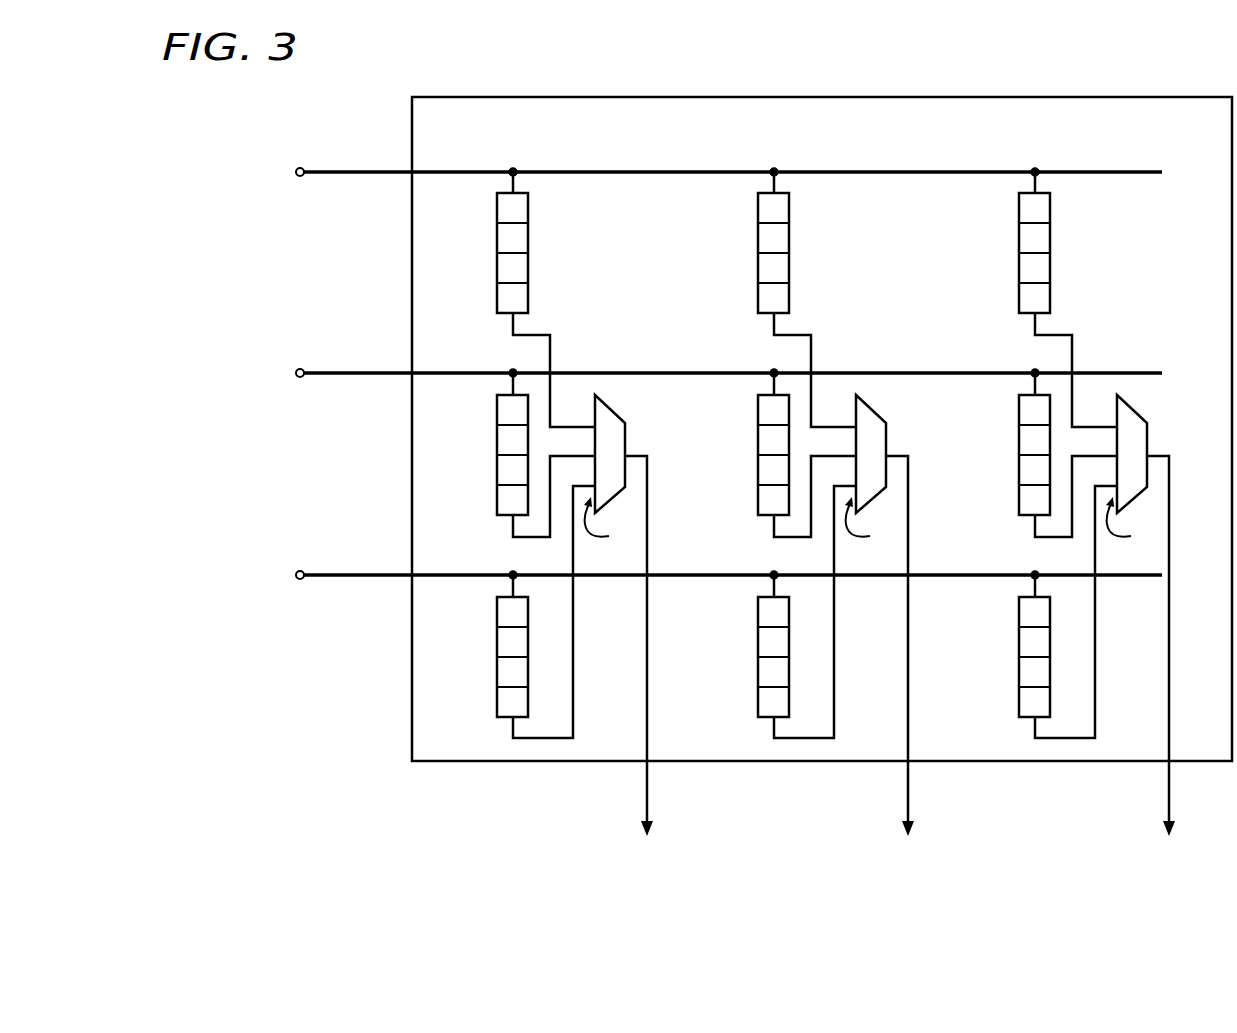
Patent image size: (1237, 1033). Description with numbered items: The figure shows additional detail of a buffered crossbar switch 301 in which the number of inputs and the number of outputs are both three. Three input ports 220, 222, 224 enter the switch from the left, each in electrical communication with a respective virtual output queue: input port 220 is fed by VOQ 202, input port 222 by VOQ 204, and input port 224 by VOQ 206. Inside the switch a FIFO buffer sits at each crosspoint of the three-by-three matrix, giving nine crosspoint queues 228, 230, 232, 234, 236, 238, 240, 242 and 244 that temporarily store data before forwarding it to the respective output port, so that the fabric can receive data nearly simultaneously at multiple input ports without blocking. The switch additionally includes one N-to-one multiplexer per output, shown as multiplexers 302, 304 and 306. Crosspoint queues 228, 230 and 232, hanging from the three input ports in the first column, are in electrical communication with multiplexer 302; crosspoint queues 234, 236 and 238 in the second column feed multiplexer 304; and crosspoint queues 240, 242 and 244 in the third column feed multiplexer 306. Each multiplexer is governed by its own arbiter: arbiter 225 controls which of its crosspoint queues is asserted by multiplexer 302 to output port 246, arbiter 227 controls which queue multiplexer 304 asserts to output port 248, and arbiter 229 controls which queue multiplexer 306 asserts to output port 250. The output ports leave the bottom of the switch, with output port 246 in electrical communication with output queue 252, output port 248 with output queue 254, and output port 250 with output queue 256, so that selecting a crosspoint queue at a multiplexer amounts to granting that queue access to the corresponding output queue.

The buffered crossbar switch 301 is at (825, 96).
The input port 220 is at (375, 169).
The input port 222 is at (374, 369).
The input port 224 is at (374, 573).
The virtual output queue 202 is at (242, 176).
The virtual output queue 204 is at (243, 377).
The virtual output queue 206 is at (243, 578).
The crosspoint queue 228 is at (497, 256).
The crosspoint queue 230 is at (497, 458).
The crosspoint queue 232 is at (497, 658).
The crosspoint queue 234 is at (778, 297).
The crosspoint queue 236 is at (778, 453).
The crosspoint queue 238 is at (778, 612).
The crosspoint queue 240 is at (1039, 297).
The crosspoint queue 242 is at (1039, 453).
The crosspoint queue 244 is at (1039, 612).
The multiplexer 302 is at (611, 411).
The multiplexer 304 is at (893, 451).
The multiplexer 306 is at (1154, 451).
The arbiter 225 is at (605, 531).
The arbiter 227 is at (866, 531).
The arbiter 229 is at (1127, 531).
The output port 246 is at (647, 800).
The output port 248 is at (880, 646).
The output port 250 is at (1141, 646).
The output queue 252 is at (644, 878).
The output queue 254 is at (908, 878).
The output queue 256 is at (1170, 878).